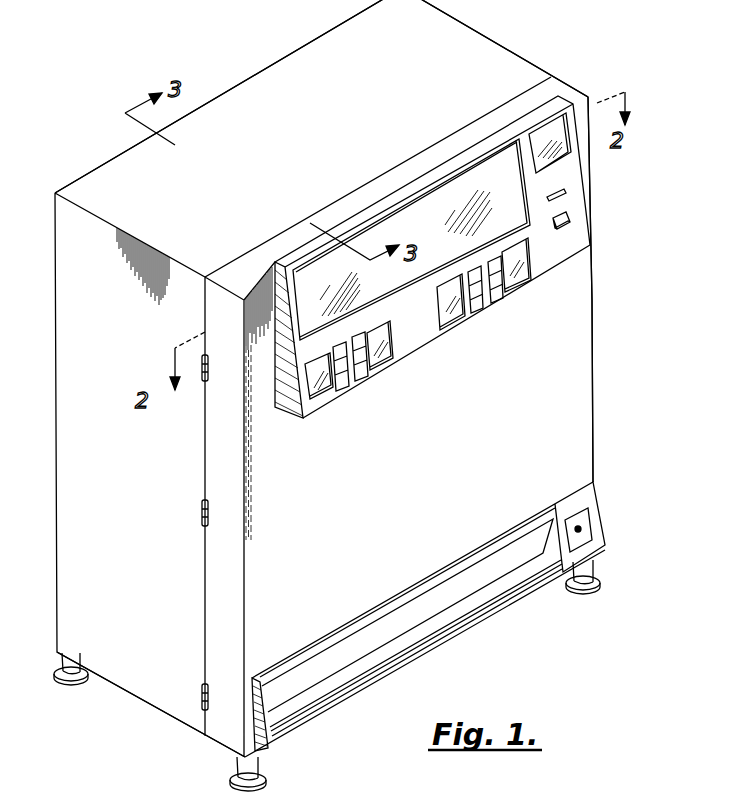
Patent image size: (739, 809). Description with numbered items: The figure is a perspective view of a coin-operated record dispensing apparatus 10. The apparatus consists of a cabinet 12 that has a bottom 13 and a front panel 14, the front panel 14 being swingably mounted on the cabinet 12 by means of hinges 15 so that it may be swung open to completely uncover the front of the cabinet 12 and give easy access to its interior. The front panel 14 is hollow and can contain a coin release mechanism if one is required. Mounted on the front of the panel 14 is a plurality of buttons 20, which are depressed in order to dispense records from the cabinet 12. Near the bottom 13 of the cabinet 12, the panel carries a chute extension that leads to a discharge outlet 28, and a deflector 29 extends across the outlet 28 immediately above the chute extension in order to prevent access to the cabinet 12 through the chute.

The record dispensing apparatus 10 is at (499, 65).
The cabinet 12 is at (306, 48).
The bottom 13 is at (127, 693).
The front panel 14 is at (587, 413).
The hinges 15 is at (202, 702).
The buttons 20 is at (342, 389).
The discharge outlet 28 is at (502, 590).
The deflector 29 is at (448, 593).